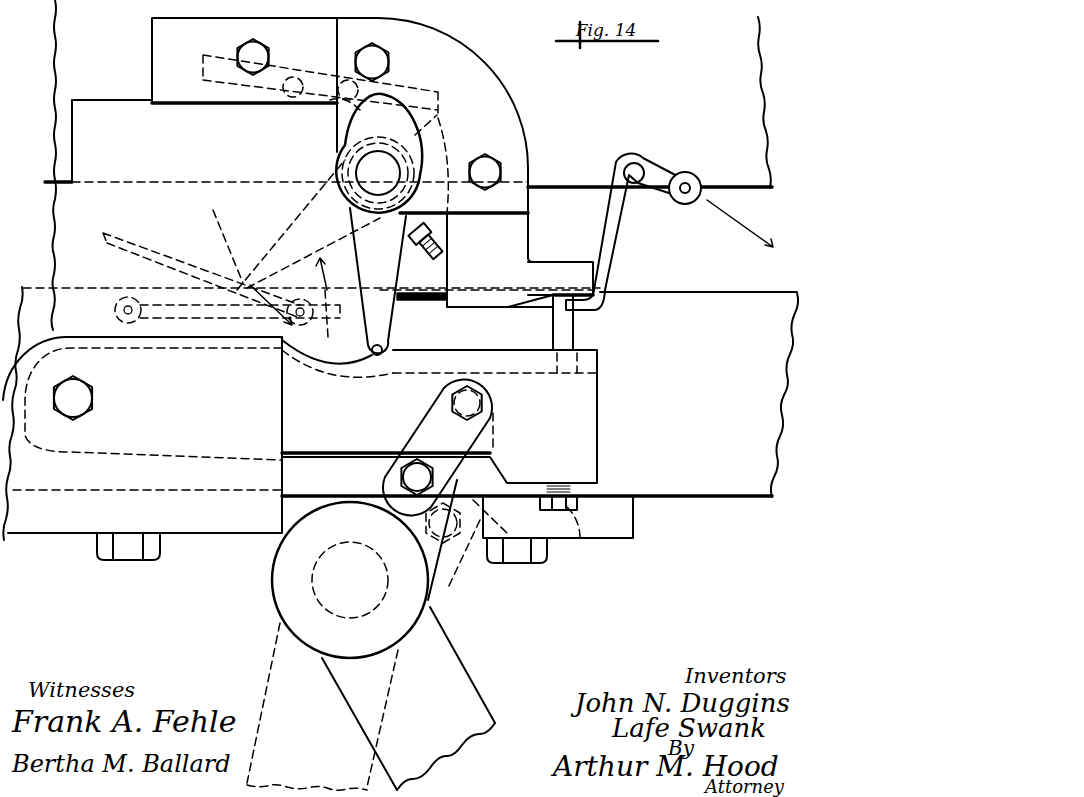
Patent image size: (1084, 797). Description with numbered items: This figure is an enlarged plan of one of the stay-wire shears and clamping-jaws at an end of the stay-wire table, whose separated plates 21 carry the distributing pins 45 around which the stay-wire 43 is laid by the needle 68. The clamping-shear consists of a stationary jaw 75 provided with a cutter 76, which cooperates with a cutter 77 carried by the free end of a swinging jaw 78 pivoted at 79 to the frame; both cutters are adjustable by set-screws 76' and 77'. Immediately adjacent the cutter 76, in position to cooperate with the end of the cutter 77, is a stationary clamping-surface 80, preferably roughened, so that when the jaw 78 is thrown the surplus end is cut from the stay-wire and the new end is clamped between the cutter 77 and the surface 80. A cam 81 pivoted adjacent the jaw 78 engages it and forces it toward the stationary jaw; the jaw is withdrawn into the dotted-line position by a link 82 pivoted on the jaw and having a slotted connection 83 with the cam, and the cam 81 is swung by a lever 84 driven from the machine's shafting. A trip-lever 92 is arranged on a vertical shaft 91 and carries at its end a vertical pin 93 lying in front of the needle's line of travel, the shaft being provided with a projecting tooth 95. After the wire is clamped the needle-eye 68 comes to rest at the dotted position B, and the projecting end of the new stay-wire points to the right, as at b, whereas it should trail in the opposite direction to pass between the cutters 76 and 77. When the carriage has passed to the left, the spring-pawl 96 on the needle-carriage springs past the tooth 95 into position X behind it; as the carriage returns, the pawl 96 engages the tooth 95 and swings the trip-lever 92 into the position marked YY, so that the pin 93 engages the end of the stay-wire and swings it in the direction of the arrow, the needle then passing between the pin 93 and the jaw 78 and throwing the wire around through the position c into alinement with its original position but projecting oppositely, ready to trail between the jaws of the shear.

The plate 21 is at (748, 173).
The stay-wire 43 is at (606, 258).
The pin 45 is at (635, 165).
The needle 68 is at (690, 181).
The stationary jaw 75 is at (486, 260).
The cutter 76 is at (530, 318).
The set-screw 76' is at (422, 261).
The cutter 77 is at (577, 334).
The set-screw 77' is at (566, 526).
The swinging jaw 78 is at (439, 416).
The pivot 79 is at (86, 398).
The clamping-surface 80 is at (562, 294).
The cam 81 is at (398, 472).
The link 82 is at (423, 433).
The slotted connection 83 is at (445, 420).
The lever 84 is at (371, 635).
The vertical shaft 91 is at (379, 153).
The trip-lever 92 is at (378, 280).
The vertical pin 93 is at (383, 348).
The tooth 95 is at (380, 93).
The spring-pawl 96 is at (347, 110).
The pawl position X is at (203, 72).
The line YY is at (296, 248).
The needle position B is at (115, 310).
The stay-wire end position b is at (316, 318).
The stay-wire swinging position c is at (201, 269).